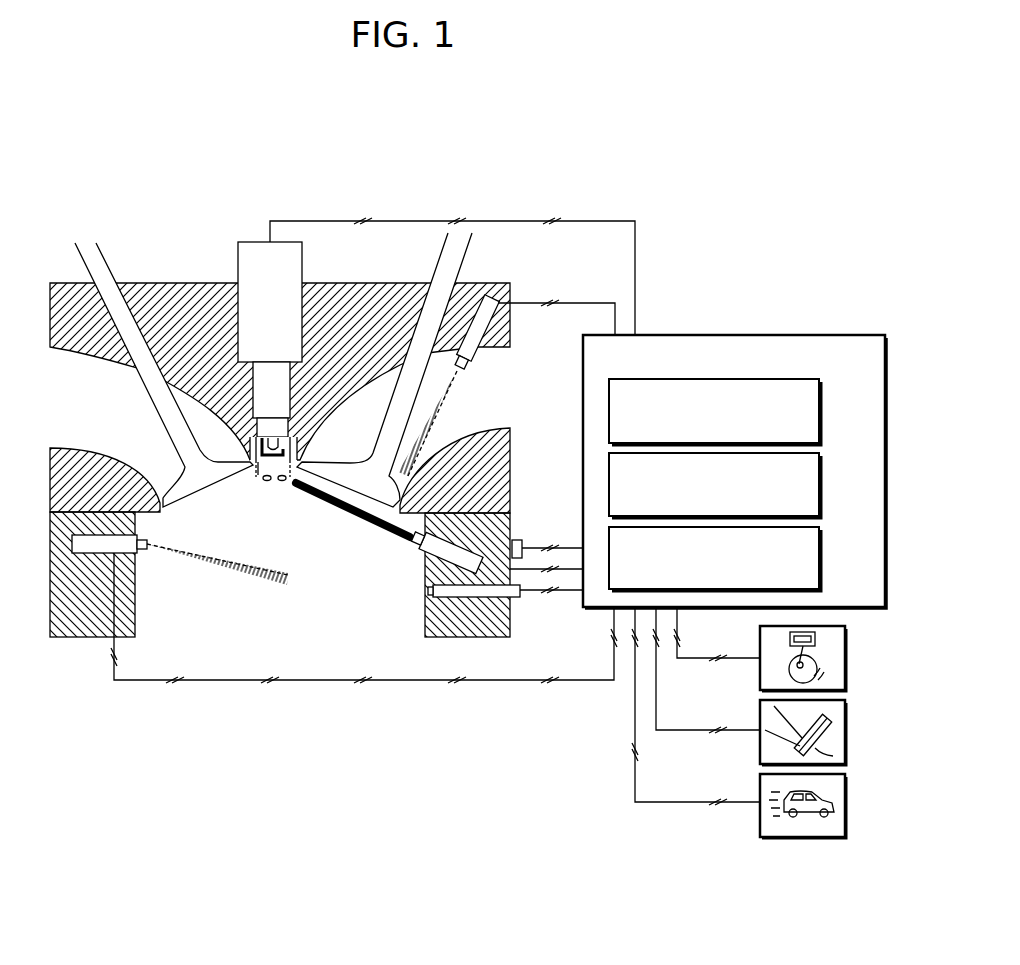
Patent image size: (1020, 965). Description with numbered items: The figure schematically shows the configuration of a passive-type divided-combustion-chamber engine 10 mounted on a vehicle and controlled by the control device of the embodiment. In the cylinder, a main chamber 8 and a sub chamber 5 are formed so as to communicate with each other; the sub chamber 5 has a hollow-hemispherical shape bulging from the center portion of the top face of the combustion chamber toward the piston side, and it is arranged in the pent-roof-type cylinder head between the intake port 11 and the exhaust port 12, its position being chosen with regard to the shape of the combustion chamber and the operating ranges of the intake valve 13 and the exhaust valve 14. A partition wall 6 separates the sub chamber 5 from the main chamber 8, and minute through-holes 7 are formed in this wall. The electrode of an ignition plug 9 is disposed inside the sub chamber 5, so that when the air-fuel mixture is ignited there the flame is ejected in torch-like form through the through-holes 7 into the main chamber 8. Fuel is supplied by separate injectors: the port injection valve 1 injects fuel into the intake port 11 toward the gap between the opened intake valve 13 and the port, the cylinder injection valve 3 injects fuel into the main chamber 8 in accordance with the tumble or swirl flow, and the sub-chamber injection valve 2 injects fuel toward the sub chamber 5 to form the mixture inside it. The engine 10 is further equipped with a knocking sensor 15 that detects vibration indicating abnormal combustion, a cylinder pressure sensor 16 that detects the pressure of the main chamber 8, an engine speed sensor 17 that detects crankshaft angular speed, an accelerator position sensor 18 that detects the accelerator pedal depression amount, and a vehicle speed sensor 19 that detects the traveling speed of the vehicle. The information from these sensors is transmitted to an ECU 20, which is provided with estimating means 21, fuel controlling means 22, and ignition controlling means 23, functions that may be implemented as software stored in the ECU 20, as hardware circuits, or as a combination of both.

The port injection valve 1 is at (478, 355).
The sub-chamber injection valve 2 is at (417, 548).
The cylinder injection valve 3 is at (140, 555).
The sub chamber 5 is at (257, 497).
The partition wall 6 is at (255, 472).
The through-holes 7 is at (273, 482).
The main chamber 8 is at (266, 628).
The ignition plug 9 is at (302, 255).
The engine 10 is at (176, 213).
The intake port 11 is at (455, 420).
The exhaust port 12 is at (78, 432).
The intake valve 13 is at (462, 262).
The exhaust valve 14 is at (105, 262).
The knocking sensor 15 is at (520, 540).
The cylinder pressure sensor 16 is at (520, 597).
The engine speed sensor 17 is at (846, 660).
The accelerator position sensor 18 is at (846, 732).
The vehicle speed sensor 19 is at (846, 805).
The ECU 20 is at (734, 444).
The estimating means 21 is at (821, 414).
The fuel controlling means 22 is at (821, 487).
The ignition controlling means 23 is at (821, 560).